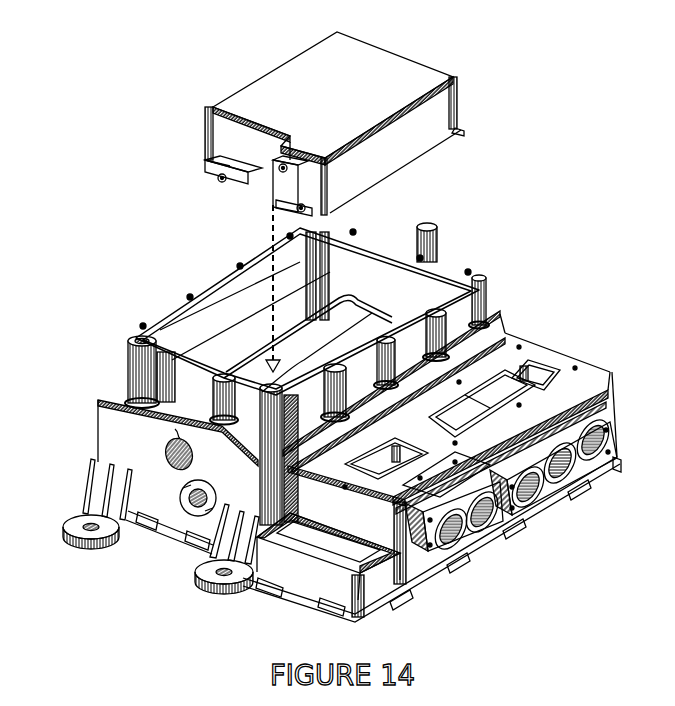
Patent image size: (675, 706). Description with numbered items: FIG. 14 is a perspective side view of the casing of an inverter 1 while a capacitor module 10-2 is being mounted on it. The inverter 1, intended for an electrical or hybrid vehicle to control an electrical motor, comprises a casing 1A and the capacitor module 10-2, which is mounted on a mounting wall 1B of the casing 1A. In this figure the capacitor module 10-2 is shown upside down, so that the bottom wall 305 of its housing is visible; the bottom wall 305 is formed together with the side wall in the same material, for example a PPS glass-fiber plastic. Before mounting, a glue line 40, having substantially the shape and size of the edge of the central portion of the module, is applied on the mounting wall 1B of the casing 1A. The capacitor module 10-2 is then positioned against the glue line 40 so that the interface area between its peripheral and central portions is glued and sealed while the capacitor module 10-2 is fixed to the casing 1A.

The inverter 1 is at (113, 146).
The casing 1A is at (533, 326).
The mounting wall 1B is at (350, 323).
The capacitor module 10-2 is at (506, 91).
The glue line 40 is at (255, 355).
The bottom wall 305 is at (290, 72).